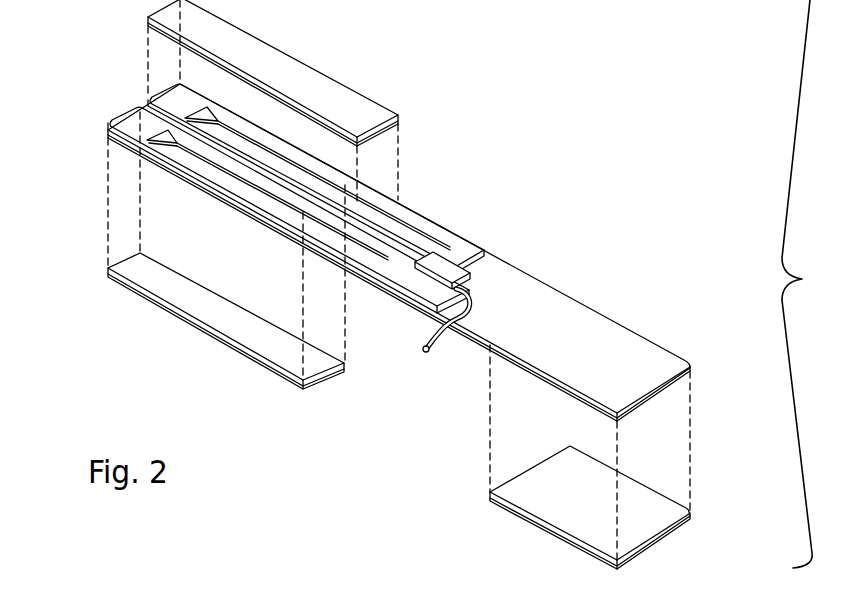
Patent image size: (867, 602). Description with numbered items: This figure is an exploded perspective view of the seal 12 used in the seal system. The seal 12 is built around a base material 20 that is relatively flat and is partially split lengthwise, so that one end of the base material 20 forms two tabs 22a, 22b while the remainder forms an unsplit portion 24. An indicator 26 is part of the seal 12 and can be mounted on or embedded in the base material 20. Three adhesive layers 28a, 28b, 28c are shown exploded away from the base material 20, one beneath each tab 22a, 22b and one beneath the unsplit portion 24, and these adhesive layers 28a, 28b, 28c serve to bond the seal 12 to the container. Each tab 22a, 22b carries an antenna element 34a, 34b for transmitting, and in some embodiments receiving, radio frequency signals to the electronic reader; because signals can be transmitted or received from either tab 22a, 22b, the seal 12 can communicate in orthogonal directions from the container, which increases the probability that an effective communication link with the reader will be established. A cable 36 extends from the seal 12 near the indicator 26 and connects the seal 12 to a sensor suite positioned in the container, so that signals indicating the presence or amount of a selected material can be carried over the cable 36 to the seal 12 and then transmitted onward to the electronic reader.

The seal 12 is at (604, 102).
The base material 20 is at (399, 322).
The tab 22a is at (313, 165).
The tab 22b is at (130, 132).
The unsplit portion 24 is at (618, 348).
The indicator 26 is at (450, 258).
The adhesive layer 28a is at (253, 32).
The adhesive layer 28b is at (157, 313).
The adhesive layer 28c is at (668, 498).
The antenna element 34a is at (200, 110).
The antenna element 34b is at (150, 136).
The cable 36 is at (430, 347).